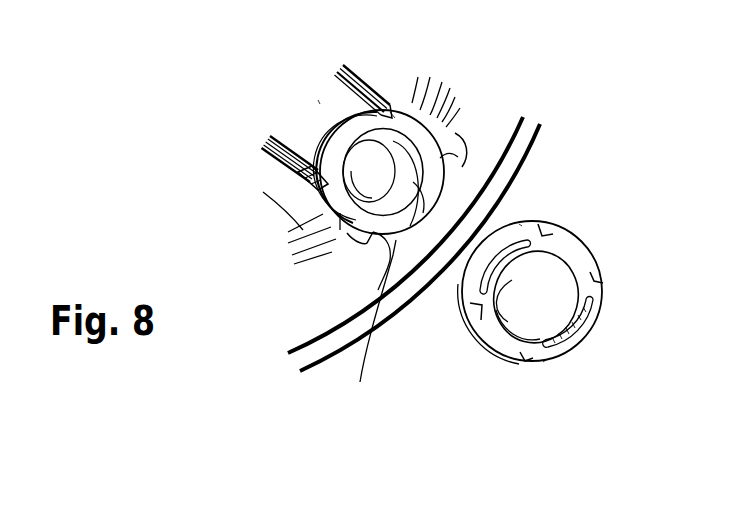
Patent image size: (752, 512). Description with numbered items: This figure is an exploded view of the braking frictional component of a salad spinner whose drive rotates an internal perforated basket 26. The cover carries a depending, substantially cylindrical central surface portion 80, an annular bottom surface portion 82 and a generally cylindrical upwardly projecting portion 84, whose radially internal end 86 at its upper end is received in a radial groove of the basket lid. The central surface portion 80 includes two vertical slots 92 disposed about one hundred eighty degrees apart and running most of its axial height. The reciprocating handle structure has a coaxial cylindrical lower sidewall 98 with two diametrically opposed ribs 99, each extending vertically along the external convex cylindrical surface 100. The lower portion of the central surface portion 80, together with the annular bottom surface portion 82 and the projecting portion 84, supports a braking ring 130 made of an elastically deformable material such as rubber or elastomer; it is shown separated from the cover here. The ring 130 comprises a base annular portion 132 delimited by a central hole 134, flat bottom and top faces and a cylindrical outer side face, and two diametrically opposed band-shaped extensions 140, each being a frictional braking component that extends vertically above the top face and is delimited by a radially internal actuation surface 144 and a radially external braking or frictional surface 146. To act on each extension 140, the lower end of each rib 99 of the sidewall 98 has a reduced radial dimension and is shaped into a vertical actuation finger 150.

The perforated basket 26 is at (537, 142).
The central surface portion 80 is at (402, 100).
The annular bottom surface portion 82 is at (445, 128).
The upwardly projecting portion 84 is at (404, 178).
The radially internal end 86 is at (369, 325).
The vertical slots 92 is at (358, 88).
The cylindrical lower sidewall 98 is at (309, 122).
The ribs 99 is at (290, 173).
The external convex cylindrical surface 100 is at (313, 100).
The braking ring 130 is at (535, 315).
The base annular portion 132 is at (578, 240).
The central hole 134 is at (540, 326).
The extensions 140 is at (516, 226).
The radially internal actuation surface 144 is at (510, 283).
The radially external braking surface 146 is at (480, 290).
The vertical actuation finger 150 is at (300, 192).